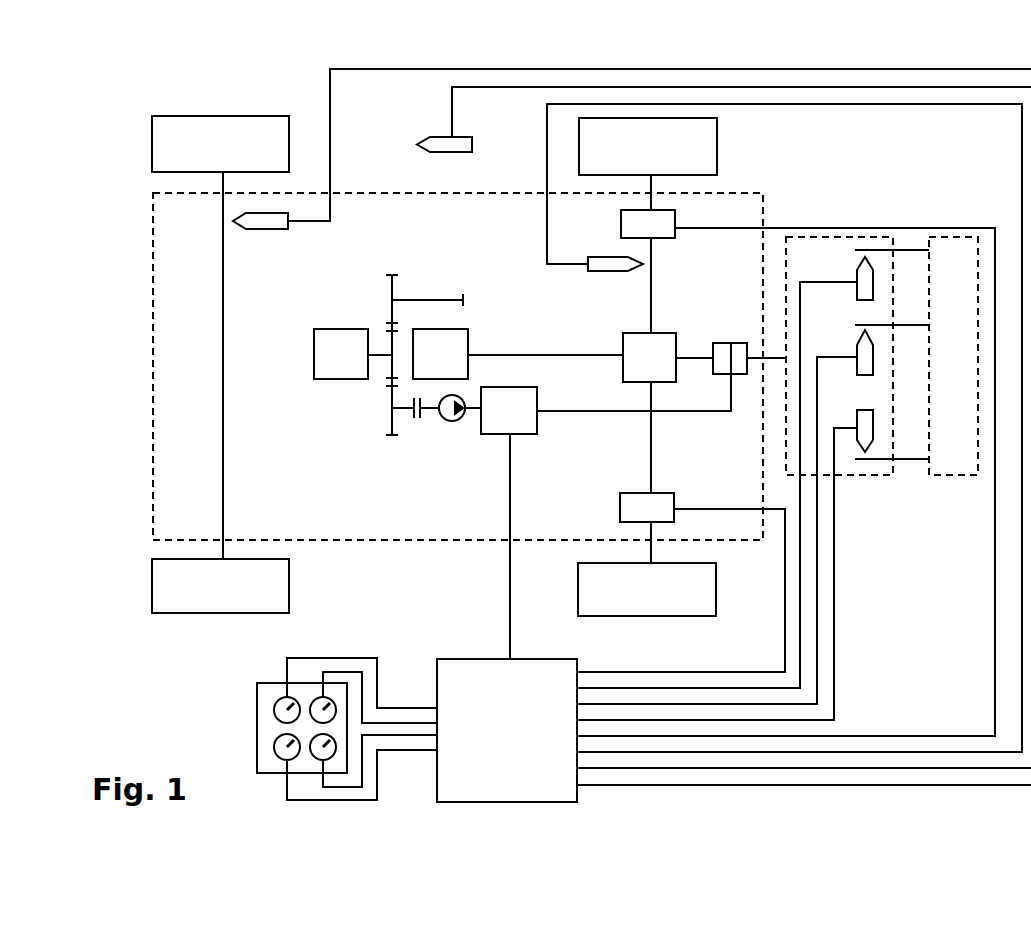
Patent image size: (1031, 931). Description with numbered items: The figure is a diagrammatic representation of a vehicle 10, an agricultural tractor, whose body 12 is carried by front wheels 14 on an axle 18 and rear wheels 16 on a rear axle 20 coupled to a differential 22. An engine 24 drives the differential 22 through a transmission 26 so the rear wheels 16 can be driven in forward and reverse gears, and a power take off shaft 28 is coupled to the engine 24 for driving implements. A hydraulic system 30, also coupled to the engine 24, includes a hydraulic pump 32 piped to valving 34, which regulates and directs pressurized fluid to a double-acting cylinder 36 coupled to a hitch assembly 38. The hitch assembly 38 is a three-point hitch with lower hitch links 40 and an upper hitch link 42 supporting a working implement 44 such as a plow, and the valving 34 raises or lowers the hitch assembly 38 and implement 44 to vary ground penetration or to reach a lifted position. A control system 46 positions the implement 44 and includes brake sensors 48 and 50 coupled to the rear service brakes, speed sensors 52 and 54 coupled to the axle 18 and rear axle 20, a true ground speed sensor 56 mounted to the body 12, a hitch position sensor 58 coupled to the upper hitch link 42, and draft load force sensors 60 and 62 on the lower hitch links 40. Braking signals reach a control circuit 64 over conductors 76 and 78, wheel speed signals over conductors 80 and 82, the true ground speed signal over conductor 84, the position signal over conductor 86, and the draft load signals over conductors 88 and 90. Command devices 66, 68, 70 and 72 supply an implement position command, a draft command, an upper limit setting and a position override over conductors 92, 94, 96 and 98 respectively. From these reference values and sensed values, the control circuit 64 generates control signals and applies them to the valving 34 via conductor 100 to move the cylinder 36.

The vehicle 10 is at (126, 314).
The body 12 is at (153, 432).
The front wheels 14 is at (238, 116).
The rear wheels 16 is at (717, 155).
The axle 18 is at (223, 425).
The rear axle 20 is at (652, 470).
The differential 22 is at (678, 340).
The engine 24 is at (348, 379).
The transmission 26 is at (468, 333).
The power take off shaft 28 is at (430, 300).
The hydraulic system 30 is at (420, 435).
The hydraulic pump 32 is at (452, 421).
The valving 34 is at (525, 434).
The double-acting cylinder 36 is at (730, 343).
The hitch assembly 38 is at (838, 237).
The lower hitch links 40 is at (897, 250).
The upper hitch link 42 is at (920, 325).
The working implement 44 is at (945, 237).
The control system 46 is at (453, 820).
The brake sensor 48 is at (621, 221).
The brake sensor 50 is at (676, 493).
The speed sensor 52 is at (262, 229).
The speed sensor 54 is at (610, 271).
The true ground speed sensor 56 is at (430, 147).
The hitch position sensor 58 is at (873, 355).
The draft load force sensor 60 is at (873, 276).
The draft load force sensor 62 is at (873, 418).
The control circuit 64 is at (528, 659).
The command device 66 is at (270, 700).
The command device 68 is at (321, 695).
The command device 70 is at (270, 738).
The command device 72 is at (318, 773).
The conductor 76 is at (868, 228).
The conductor 78 is at (783, 520).
The conductor 80 is at (430, 69).
The conductor 82 is at (547, 125).
The conductor 84 is at (452, 98).
The conductor 86 is at (817, 628).
The conductor 88 is at (834, 665).
The conductor 90 is at (800, 588).
The conductor 92 is at (352, 655).
The conductor 94 is at (390, 720).
The conductor 96 is at (360, 802).
The conductor 98 is at (395, 740).
The conductor 100 is at (510, 587).